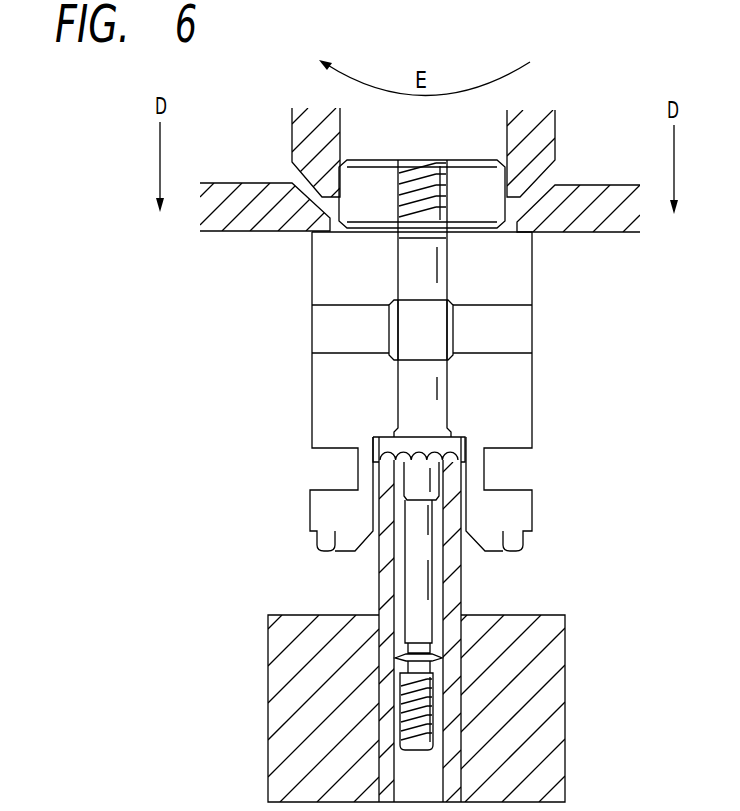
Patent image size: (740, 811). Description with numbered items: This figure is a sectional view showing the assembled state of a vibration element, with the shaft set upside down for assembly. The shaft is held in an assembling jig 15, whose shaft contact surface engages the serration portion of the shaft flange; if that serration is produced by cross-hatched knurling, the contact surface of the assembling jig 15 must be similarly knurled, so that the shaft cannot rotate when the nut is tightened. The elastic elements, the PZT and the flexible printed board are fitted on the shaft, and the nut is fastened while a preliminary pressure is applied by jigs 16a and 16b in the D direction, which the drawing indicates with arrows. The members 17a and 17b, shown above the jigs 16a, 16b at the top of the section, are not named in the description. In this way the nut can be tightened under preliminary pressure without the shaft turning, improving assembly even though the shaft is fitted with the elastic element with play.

The assembling jig 15 is at (279, 690).
The jig 16a is at (243, 222).
The jig 16b is at (600, 217).
The left gripping jaw 17a is at (292, 128).
The right gripping jaw 17b is at (557, 125).